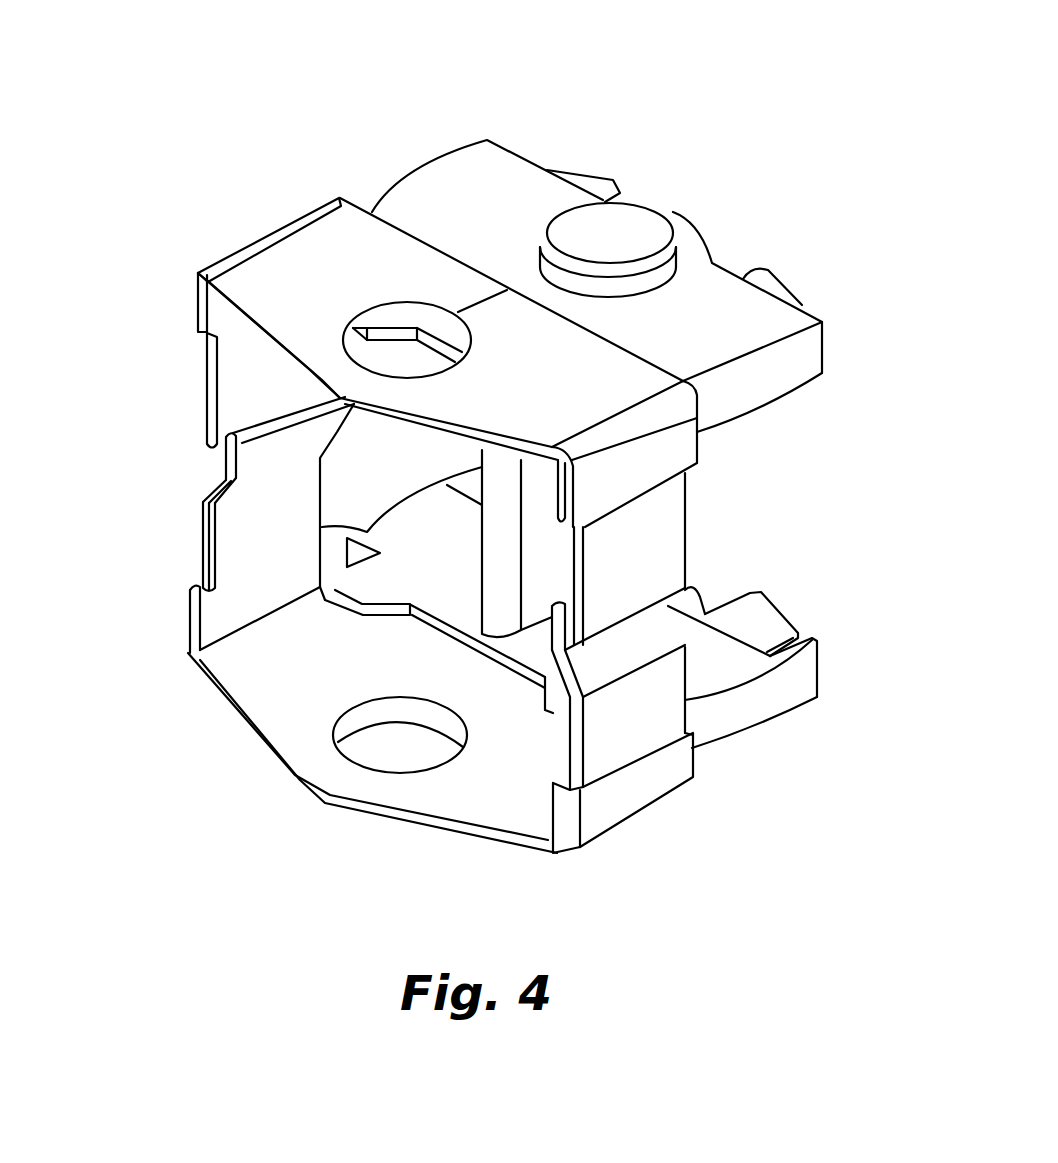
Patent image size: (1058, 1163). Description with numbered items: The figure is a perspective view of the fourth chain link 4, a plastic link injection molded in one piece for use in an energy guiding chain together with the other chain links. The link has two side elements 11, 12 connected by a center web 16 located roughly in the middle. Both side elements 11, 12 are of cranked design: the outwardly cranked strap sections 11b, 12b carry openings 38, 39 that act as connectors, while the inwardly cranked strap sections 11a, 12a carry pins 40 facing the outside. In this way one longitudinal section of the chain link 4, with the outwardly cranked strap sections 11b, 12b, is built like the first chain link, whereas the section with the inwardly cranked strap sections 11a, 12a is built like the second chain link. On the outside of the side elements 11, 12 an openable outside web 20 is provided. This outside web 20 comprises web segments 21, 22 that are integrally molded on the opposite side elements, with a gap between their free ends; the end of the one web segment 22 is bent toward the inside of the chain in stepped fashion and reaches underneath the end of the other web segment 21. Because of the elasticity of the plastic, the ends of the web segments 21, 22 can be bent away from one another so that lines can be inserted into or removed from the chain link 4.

The fourth chain link 4 is at (588, 112).
The side element 11 is at (362, 207).
The inwardly cranked strap section 11a is at (480, 173).
The outwardly cranked strap section 11b is at (288, 265).
The side element 12 is at (693, 747).
The inwardly cranked strap section 12a is at (763, 727).
The outwardly cranked strap section 12b is at (607, 823).
The center web 16 is at (500, 518).
The outside web 20 is at (182, 435).
The web segment 21 is at (232, 373).
The web segment 22 is at (202, 542).
The opening 38 is at (372, 320).
The opening 39 is at (360, 719).
The pin 40 is at (617, 237).